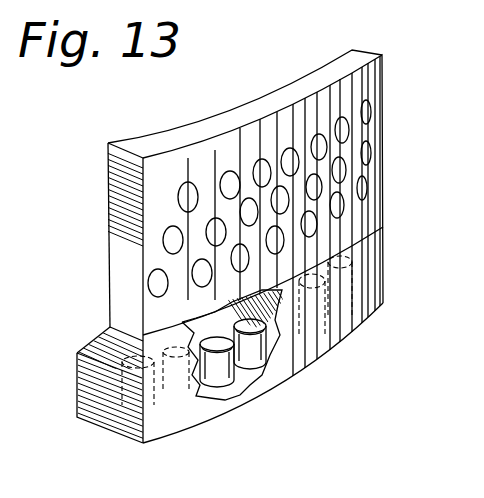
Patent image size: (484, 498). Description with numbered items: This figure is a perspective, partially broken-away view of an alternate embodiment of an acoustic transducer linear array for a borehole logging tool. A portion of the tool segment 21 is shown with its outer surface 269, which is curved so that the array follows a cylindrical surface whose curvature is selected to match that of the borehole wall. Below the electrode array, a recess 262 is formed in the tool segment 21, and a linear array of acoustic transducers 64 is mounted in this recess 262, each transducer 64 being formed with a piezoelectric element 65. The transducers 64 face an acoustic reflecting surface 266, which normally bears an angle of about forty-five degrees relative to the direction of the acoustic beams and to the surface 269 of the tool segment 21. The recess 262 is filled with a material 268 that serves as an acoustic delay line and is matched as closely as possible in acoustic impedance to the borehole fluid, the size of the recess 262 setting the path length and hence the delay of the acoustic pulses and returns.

The tool segment 21 is at (306, 72).
The surface of tool segment 269 is at (357, 87).
The recess 262 is at (93, 352).
The acoustic reflecting surface 266 is at (132, 345).
The material filling the recess 268 is at (278, 303).
The acoustic transducer 64 is at (219, 376).
The piezoelectric element 65 is at (250, 322).